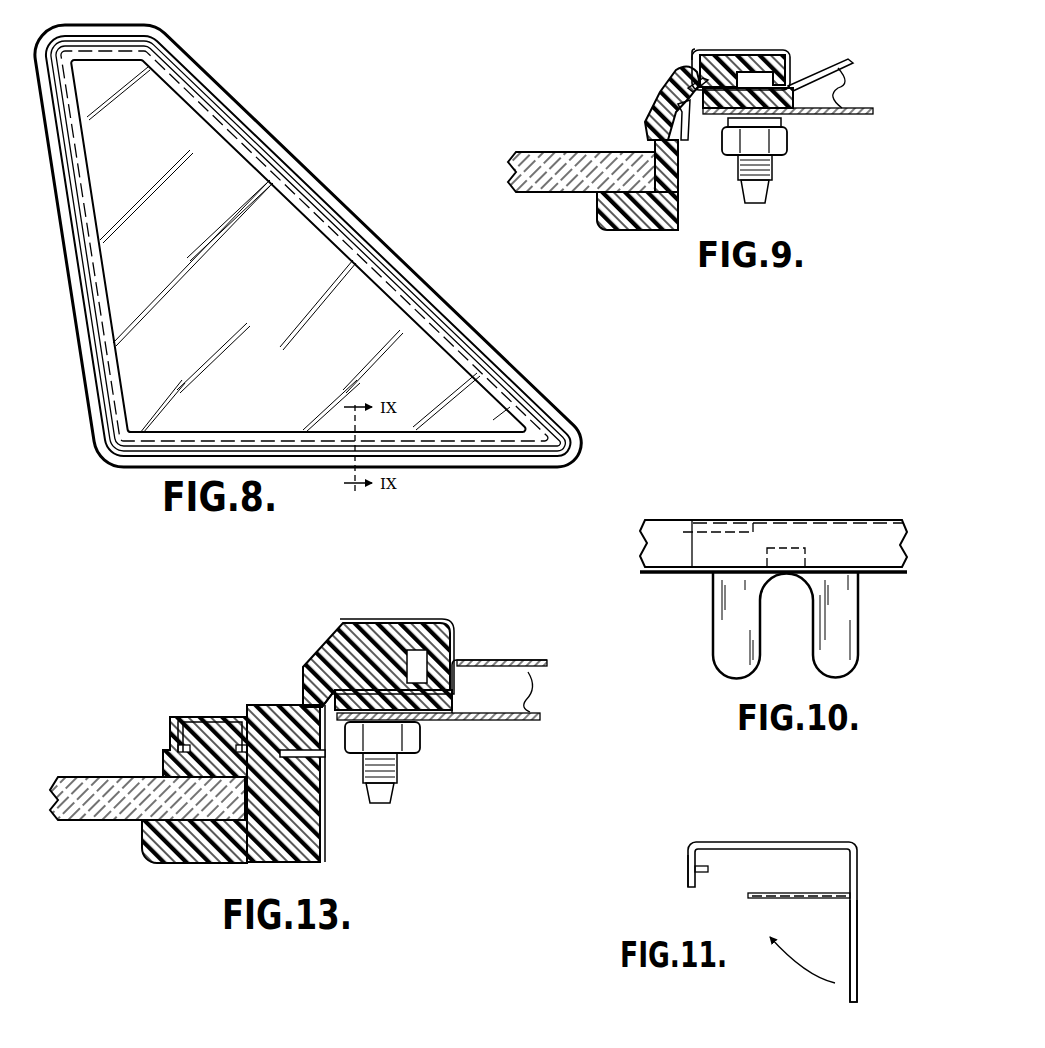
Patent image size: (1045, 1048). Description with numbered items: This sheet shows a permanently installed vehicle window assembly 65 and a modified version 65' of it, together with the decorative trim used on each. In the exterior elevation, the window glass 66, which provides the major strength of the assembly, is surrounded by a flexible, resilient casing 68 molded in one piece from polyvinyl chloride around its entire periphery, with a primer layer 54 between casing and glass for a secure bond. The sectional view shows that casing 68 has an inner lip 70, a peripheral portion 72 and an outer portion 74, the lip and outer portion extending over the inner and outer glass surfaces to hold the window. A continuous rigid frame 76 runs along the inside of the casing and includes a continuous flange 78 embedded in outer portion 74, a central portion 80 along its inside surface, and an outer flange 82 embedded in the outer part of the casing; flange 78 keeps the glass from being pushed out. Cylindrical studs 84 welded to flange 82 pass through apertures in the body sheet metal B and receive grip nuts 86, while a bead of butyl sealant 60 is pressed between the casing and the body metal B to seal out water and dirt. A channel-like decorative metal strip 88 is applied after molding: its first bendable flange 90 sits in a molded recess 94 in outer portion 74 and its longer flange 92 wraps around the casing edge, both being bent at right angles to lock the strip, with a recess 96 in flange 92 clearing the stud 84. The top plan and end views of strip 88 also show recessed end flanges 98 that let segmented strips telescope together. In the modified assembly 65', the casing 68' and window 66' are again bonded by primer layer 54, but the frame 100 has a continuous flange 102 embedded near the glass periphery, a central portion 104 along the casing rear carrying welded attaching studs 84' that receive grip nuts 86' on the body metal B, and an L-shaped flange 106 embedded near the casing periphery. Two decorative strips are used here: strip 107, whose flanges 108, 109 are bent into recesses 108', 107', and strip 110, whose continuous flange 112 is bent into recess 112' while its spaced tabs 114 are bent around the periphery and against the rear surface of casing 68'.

In FIG. 9, the primer layer 54 is at (648, 146).
In FIG. 13, the primer layer 54 is at (145, 834).
In FIG. 9, the butyl sealant bead 60 is at (797, 99).
In FIG. 13, the butyl sealant bead 60 is at (455, 698).
In FIG. 8, the window assembly 65 is at (344, 131).
In FIG. 9, the window assembly 65 is at (645, 50).
In FIG. 13, the modified window assembly 65' is at (171, 670).
In FIG. 8, the window glass 66 is at (298, 246).
In FIG. 9, the window glass 66 is at (581, 146).
In FIG. 13, the window glass 66' is at (147, 777).
In FIG. 9, the casing 68 is at (606, 249).
In FIG. 13, the casing 68' is at (173, 890).
In FIG. 9, the inner lip 70 is at (664, 218).
In FIG. 9, the peripheral portion 72 is at (679, 208).
In FIG. 9, the outer portion 74 is at (652, 108).
In FIG. 9, the rigid frame 76 is at (688, 118).
In FIG. 9, the continuous flange 78 is at (679, 158).
In FIG. 9, the central portion 80 is at (692, 88).
In FIG. 9, the outer flange 82 is at (786, 58).
In FIG. 9, the cylindrical stud 84 is at (776, 179).
In FIG. 13, the attaching stud 84' is at (404, 778).
In FIG. 8, the grip nut 86 is at (308, 246).
In FIG. 9, the grip nut 86 is at (773, 139).
In FIG. 13, the grip nut 86' is at (400, 743).
In FIG. 8, the decorative metal strip 88 is at (327, 199).
In FIG. 9, the decorative metal strip 88 is at (750, 50).
In FIG. 10, the decorative metal strip 88 is at (770, 520).
In FIG. 11, the decorative metal strip 88 is at (790, 842).
In FIG. 9, the first bendable flange 90 is at (700, 52).
In FIG. 10, the first bendable flange 90 is at (880, 552).
In FIG. 11, the first bendable flange 90 is at (688, 859).
In FIG. 9, the longer bendable flange 92 is at (800, 68).
In FIG. 10, the longer bendable flange 92 is at (727, 613).
In FIG. 11, the longer bendable flange 92 is at (855, 938).
In FIG. 9, the molded recess 94 is at (722, 56).
In FIG. 10, the recess 96 is at (823, 607).
In FIG. 10, the recessed end flange 98 is at (720, 528).
In FIG. 13, the frame 100 is at (324, 775).
In FIG. 13, the continuous flange 102 is at (322, 845).
In FIG. 13, the central portion 104 is at (325, 757).
In FIG. 13, the L-shaped flange 106 is at (420, 650).
In FIG. 13, the decorative metal strip 107 is at (213, 694).
In FIG. 13, the recess 107' is at (180, 747).
In FIG. 13, the flange 108 is at (273, 771).
In FIG. 13, the recess 108' is at (283, 859).
In FIG. 13, the flange 109 is at (178, 727).
In FIG. 13, the decorative metal strip 110 is at (373, 623).
In FIG. 13, the continuous flange 112 is at (360, 664).
In FIG. 13, the recess 112' is at (288, 679).
In FIG. 13, the tab 114 is at (452, 640).
In FIG. 9, the body sheet metal B is at (788, 99).
In FIG. 13, the body sheet metal B is at (442, 690).